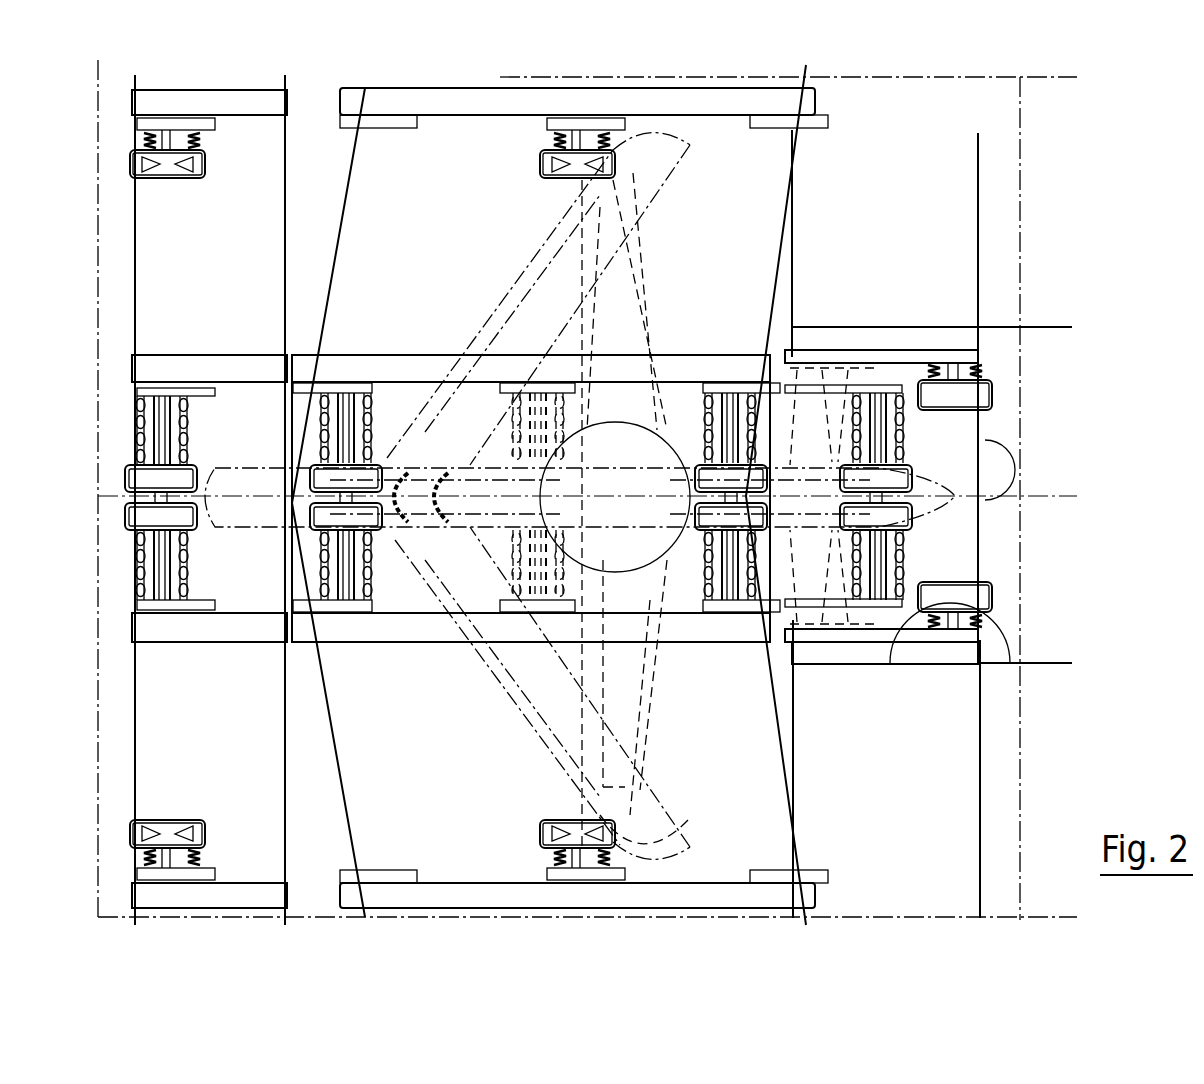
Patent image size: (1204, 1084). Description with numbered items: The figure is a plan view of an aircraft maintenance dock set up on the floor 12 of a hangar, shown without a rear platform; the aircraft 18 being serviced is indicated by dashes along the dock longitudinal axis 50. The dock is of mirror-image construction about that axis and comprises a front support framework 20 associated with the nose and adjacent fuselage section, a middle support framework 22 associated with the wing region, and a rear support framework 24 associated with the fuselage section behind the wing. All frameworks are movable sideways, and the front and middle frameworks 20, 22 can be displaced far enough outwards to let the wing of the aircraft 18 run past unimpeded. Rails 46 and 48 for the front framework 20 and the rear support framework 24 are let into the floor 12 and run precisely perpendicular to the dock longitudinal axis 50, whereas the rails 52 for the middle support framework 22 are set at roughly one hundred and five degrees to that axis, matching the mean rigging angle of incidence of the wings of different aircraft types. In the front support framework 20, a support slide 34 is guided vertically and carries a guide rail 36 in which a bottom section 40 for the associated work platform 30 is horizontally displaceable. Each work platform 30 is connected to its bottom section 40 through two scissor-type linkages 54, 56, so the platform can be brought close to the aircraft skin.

The floor 12 is at (1054, 731).
The aircraft 18 is at (688, 850).
The front support framework 20 is at (243, 100).
The middle support framework 22 is at (465, 102).
The rear support framework 24 is at (912, 330).
The work platform 30 is at (190, 167).
The support slide 34 is at (378, 120).
The guide rail 36 is at (822, 128).
The bottom section 40 is at (945, 360).
The rail 46 is at (285, 321).
The rail 48 is at (793, 838).
The dock longitudinal axis 50 is at (1000, 452).
The rail 52 is at (345, 773).
The scissor-type linkage 54 is at (903, 632).
The scissor-type linkage 56 is at (985, 663).